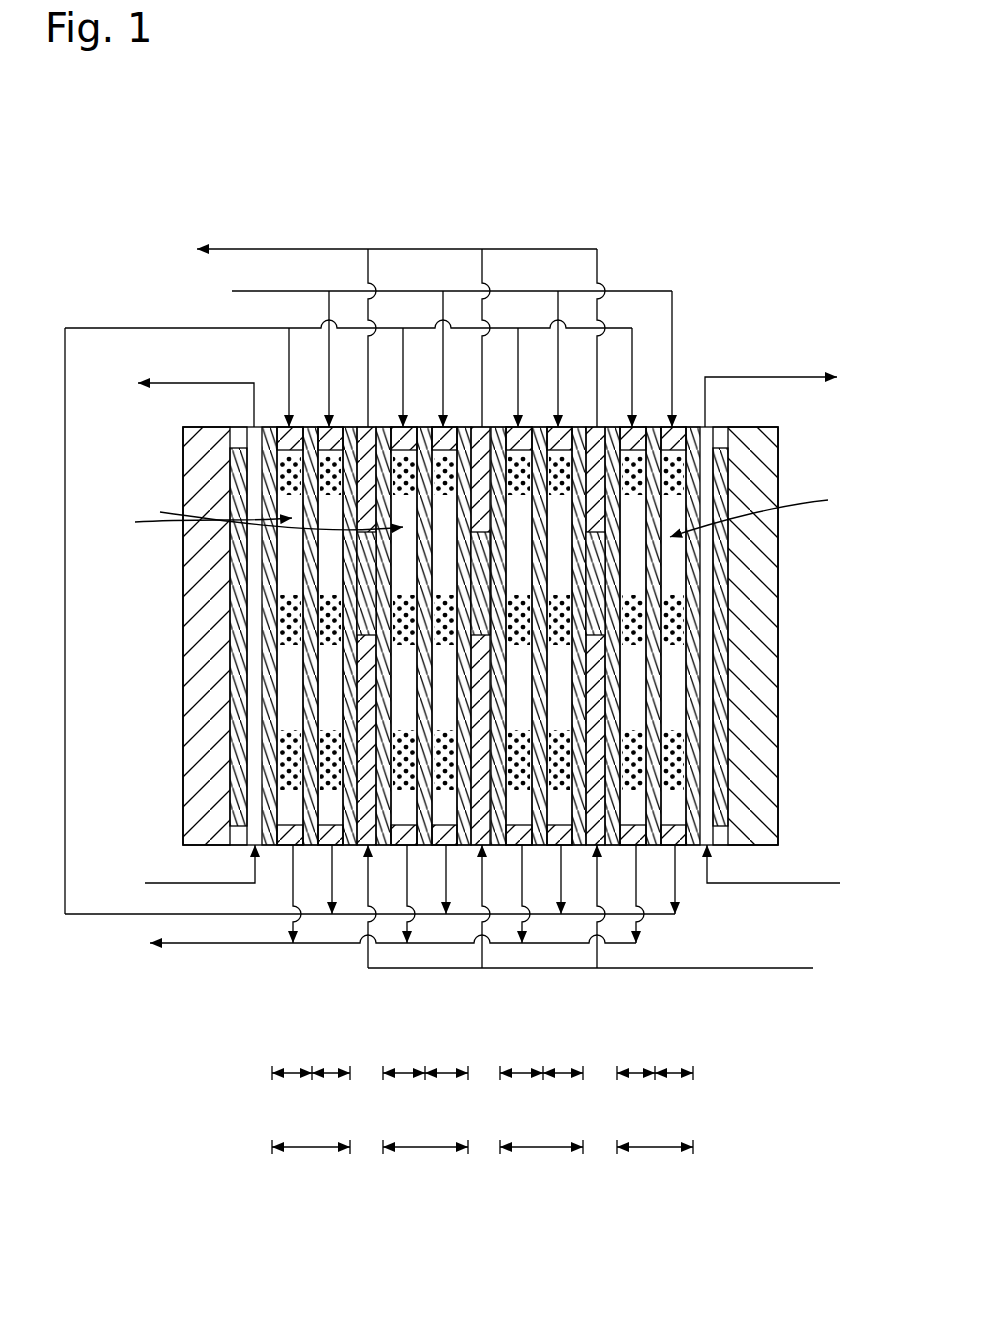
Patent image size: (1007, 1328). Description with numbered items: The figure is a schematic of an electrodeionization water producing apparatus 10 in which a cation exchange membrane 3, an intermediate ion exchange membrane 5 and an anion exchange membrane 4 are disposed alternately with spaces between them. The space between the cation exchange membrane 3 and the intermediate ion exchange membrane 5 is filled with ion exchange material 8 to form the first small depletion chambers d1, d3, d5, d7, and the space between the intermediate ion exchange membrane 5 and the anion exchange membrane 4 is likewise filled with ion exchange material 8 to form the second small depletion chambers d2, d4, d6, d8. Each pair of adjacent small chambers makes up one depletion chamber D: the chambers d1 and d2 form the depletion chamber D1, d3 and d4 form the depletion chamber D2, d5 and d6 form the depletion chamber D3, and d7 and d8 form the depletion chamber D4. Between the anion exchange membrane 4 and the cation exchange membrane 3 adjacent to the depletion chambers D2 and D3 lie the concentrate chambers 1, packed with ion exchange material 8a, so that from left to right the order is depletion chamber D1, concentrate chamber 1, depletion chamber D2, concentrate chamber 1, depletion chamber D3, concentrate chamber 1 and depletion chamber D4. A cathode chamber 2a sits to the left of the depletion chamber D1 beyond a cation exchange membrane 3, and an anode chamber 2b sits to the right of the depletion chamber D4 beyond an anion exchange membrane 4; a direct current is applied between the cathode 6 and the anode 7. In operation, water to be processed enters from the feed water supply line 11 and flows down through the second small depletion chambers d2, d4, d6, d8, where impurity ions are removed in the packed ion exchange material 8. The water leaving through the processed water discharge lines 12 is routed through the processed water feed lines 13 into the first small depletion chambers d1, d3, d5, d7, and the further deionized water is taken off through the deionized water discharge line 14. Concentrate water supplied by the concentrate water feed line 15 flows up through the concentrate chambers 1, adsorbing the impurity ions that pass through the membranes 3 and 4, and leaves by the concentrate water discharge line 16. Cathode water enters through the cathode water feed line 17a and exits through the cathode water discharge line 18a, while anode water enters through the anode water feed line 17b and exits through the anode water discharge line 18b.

The concentrate chamber 1 is at (347, 650).
The cathode chamber 2a is at (260, 672).
The anode chamber 2b is at (705, 665).
The cation exchange membrane 3 is at (365, 742).
The anion exchange membrane 4 is at (700, 735).
The intermediate ion exchange membrane 5 is at (300, 485).
The cathode 6 is at (243, 710).
The anode 7 is at (725, 702).
The ion exchange material 8 is at (287, 615).
The ion exchange material 8a is at (420, 795).
The fuel cell stack 10 is at (661, 262).
The feed water supply line 11 is at (262, 291).
The processed water discharge line 12 is at (334, 885).
The processed water feed line 13 is at (291, 380).
The deionized water discharge line 14 is at (207, 943).
The concentrate water feed line 15 is at (772, 968).
The concentrate water discharge line 16 is at (328, 249).
The cathode water feed line 17a is at (182, 883).
The anode water feed line 17b is at (795, 883).
The cathode water discharge line 18a is at (183, 383).
The anode water discharge line 18b is at (750, 377).
The cell pitch D is at (479, 511).
The first small depletion chamber d1 is at (293, 560).
The second small depletion chamber d2 is at (333, 570).
The first small depletion chamber d3 is at (404, 1059).
The second small depletion chamber d4 is at (446, 1059).
The first small depletion chamber d5 is at (521, 1059).
The second small depletion chamber d6 is at (563, 1059).
The first small depletion chamber d7 is at (636, 575).
The second small depletion chamber d8 is at (678, 588).
The depletion chamber D1 is at (311, 1135).
The depletion chamber D2 is at (425, 1135).
The depletion chamber D3 is at (541, 1135).
The depletion chamber D4 is at (655, 1135).